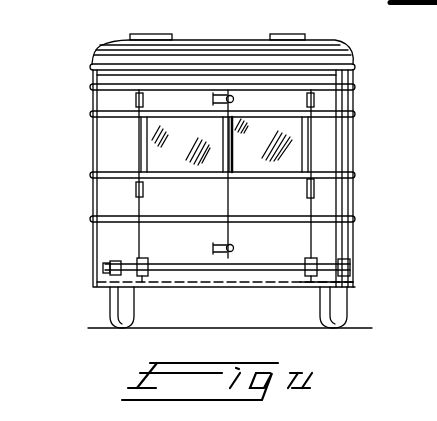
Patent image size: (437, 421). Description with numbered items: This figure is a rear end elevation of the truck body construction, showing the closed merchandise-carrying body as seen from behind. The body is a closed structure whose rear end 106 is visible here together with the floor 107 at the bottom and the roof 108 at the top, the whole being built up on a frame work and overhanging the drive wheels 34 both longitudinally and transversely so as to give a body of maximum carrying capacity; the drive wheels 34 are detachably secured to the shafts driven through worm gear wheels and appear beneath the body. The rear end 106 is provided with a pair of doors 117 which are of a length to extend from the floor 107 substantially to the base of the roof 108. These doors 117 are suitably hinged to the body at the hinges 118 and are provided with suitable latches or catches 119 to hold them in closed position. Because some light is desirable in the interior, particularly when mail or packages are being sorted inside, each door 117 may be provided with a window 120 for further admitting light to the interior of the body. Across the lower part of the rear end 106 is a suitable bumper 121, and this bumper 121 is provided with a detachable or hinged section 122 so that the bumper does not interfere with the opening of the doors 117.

The drive wheel 34 is at (132, 307).
The rear end 106 is at (332, 83).
The floor 107 is at (293, 283).
The roof 108 is at (233, 26).
The doors 117 is at (163, 240).
The hinges 118 is at (146, 189).
The latches or catches 119 is at (234, 99).
The window 120 is at (160, 153).
The bumper 121 is at (133, 277).
The detachable or hinged section 122 is at (250, 271).